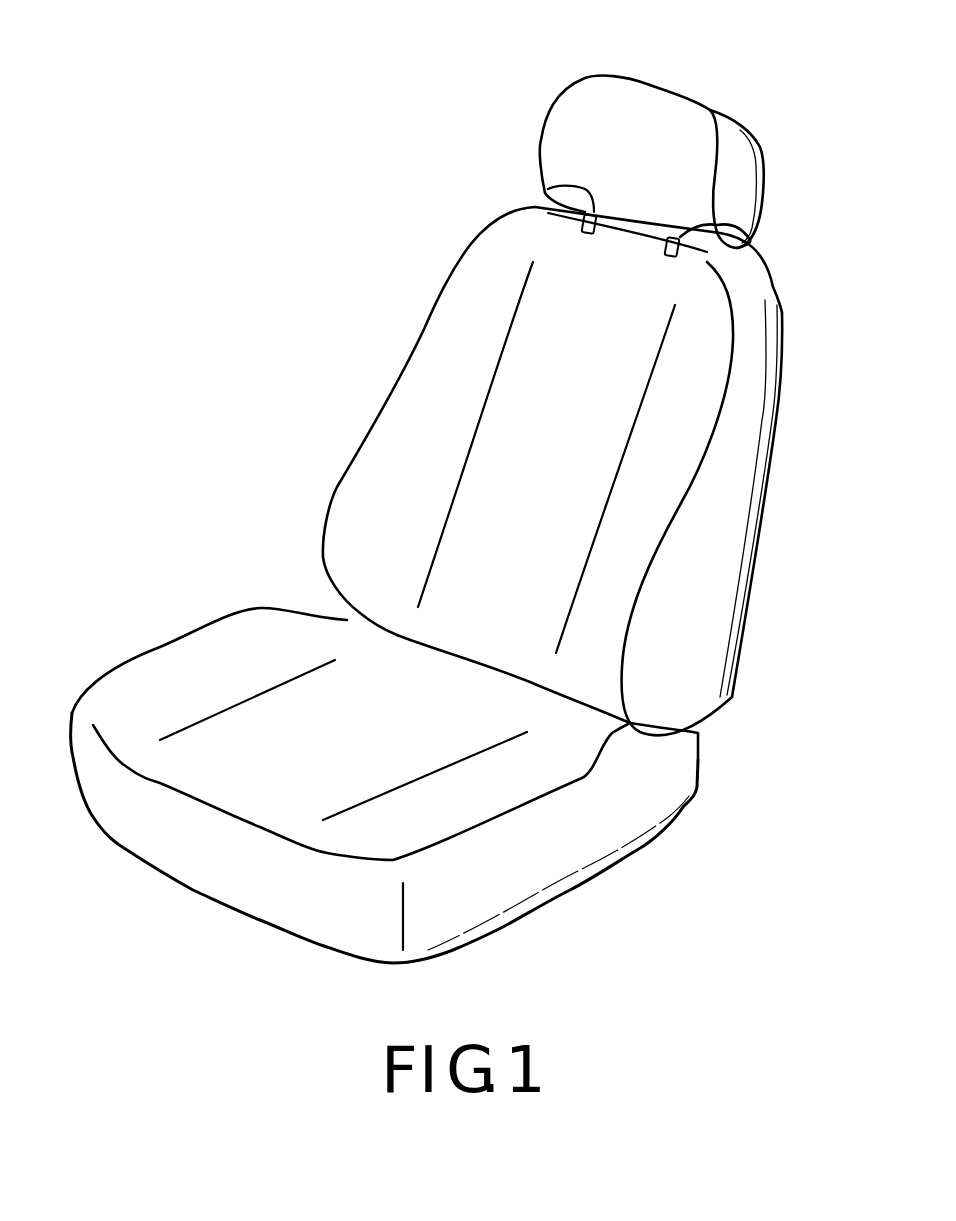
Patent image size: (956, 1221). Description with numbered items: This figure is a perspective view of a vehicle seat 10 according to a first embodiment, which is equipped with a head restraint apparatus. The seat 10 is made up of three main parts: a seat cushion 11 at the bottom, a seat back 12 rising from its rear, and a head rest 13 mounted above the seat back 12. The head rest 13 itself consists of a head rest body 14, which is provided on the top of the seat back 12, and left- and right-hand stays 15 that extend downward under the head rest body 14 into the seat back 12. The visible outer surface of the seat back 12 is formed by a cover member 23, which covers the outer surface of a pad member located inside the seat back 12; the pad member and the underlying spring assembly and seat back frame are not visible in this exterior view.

The vehicle seat 10 is at (368, 183).
The seat cushion 11 is at (265, 717).
The seat back 12 is at (528, 423).
The head rest 13 is at (545, 97).
The head rest body 14 is at (662, 123).
The stays 15 is at (547, 197).
The cover member 23 is at (372, 500).